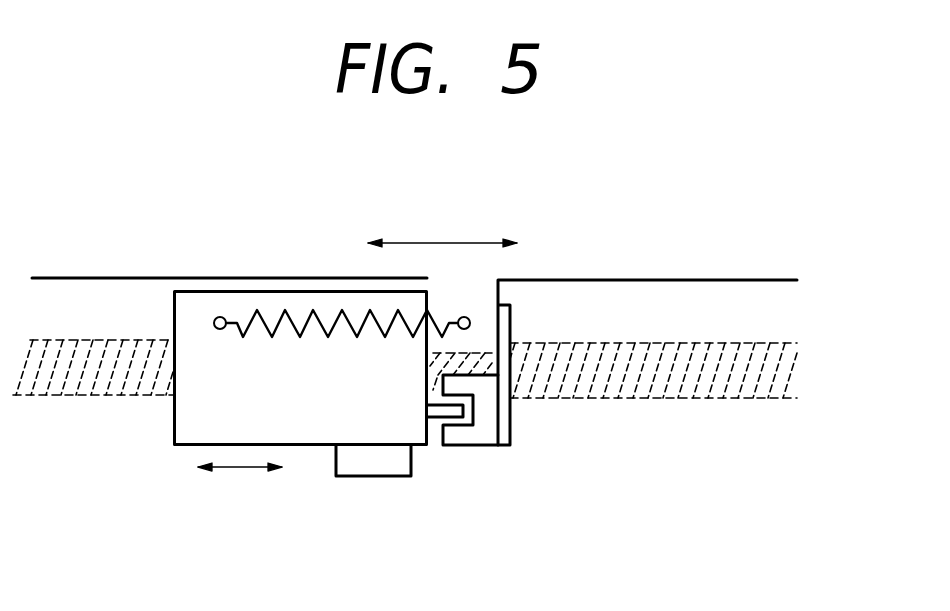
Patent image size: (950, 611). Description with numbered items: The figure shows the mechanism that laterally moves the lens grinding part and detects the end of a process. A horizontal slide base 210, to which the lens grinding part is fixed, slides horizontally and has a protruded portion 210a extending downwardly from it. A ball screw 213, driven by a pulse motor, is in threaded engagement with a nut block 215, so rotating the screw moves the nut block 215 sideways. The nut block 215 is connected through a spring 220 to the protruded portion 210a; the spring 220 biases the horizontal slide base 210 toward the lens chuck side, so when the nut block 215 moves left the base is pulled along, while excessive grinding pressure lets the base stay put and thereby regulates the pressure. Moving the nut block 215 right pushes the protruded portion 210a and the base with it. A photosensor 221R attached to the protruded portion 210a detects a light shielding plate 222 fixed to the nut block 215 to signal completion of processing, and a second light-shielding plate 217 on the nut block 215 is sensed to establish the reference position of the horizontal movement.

The horizontal slide base 210 is at (742, 257).
The protruded portion 210a is at (463, 293).
The ball screw 213 is at (653, 403).
The nut block 215 is at (174, 428).
The light-shielding plate 217 is at (350, 470).
The spring 220 is at (295, 318).
The photosensor 221R is at (483, 437).
The light shielding plate 222 is at (437, 411).